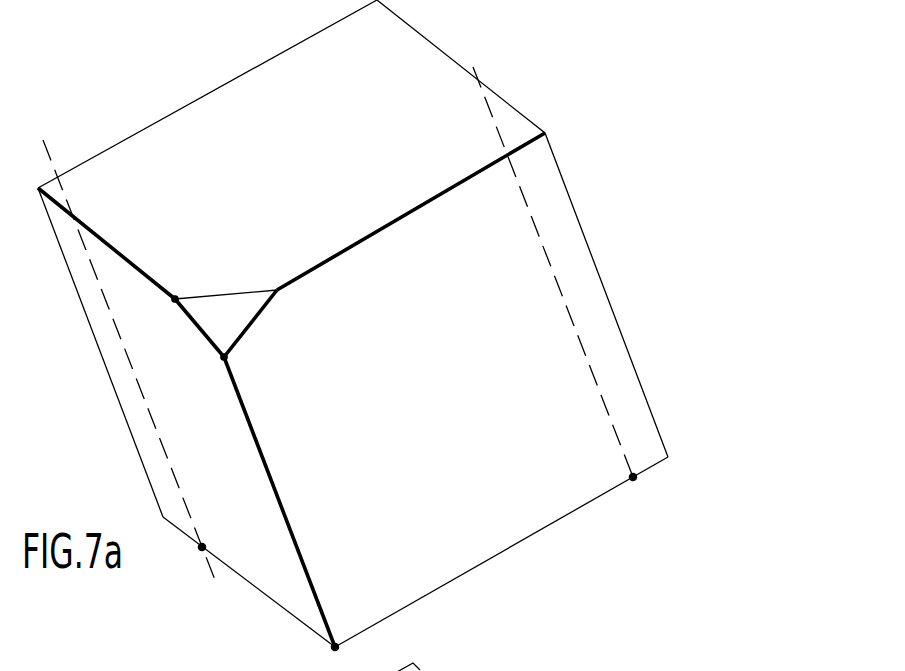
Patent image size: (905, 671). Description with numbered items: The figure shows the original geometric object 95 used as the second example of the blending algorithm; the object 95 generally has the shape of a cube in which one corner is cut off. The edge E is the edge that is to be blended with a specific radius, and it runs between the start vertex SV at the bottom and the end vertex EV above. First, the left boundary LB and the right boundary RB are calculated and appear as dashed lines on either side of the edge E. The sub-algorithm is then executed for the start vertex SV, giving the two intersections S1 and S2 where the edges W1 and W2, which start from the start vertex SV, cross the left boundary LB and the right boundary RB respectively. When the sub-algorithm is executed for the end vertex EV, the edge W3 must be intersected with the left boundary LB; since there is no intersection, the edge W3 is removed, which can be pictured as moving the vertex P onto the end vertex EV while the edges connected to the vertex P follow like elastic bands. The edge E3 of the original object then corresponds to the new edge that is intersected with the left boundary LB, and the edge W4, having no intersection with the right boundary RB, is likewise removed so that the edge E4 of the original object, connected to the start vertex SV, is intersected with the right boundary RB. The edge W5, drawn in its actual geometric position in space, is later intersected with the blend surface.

The object 95 is at (534, 68).
The edge E3 is at (110, 243).
The edge E4 is at (397, 218).
The edge E is at (272, 486).
The edge W3 is at (196, 327).
The edge W4 is at (258, 314).
The edge W5 is at (240, 289).
The vertex P is at (177, 296).
The end vertex EV is at (227, 359).
The start vertex SV is at (338, 640).
The intersection S1 is at (205, 545).
The intersection S2 is at (630, 476).
The left boundary LB is at (130, 388).
The right boundary RB is at (563, 300).
The edge W1 is at (262, 592).
The edge W2 is at (506, 549).